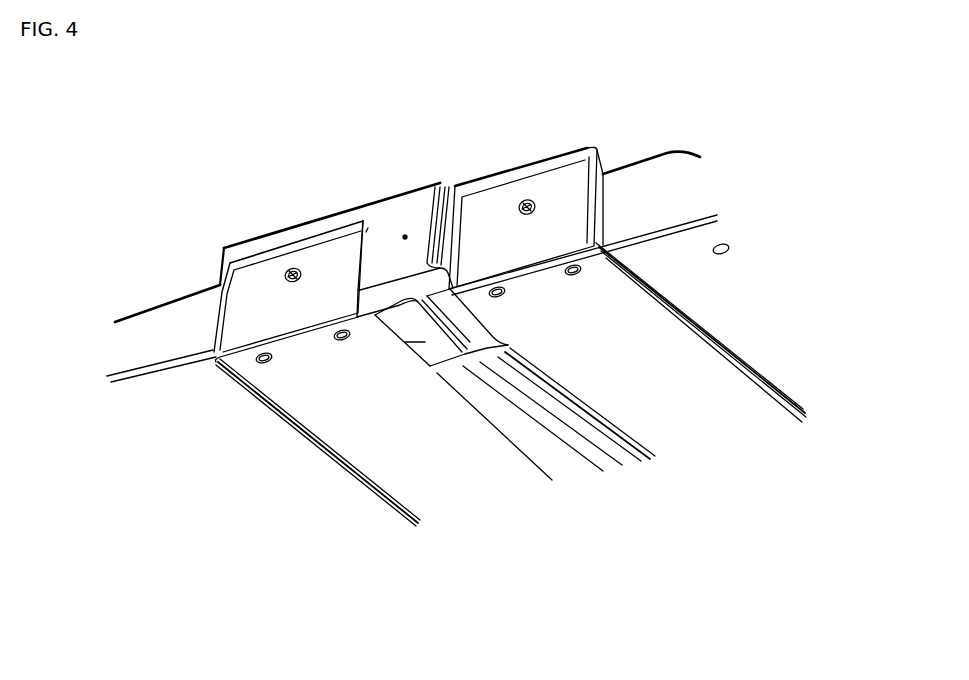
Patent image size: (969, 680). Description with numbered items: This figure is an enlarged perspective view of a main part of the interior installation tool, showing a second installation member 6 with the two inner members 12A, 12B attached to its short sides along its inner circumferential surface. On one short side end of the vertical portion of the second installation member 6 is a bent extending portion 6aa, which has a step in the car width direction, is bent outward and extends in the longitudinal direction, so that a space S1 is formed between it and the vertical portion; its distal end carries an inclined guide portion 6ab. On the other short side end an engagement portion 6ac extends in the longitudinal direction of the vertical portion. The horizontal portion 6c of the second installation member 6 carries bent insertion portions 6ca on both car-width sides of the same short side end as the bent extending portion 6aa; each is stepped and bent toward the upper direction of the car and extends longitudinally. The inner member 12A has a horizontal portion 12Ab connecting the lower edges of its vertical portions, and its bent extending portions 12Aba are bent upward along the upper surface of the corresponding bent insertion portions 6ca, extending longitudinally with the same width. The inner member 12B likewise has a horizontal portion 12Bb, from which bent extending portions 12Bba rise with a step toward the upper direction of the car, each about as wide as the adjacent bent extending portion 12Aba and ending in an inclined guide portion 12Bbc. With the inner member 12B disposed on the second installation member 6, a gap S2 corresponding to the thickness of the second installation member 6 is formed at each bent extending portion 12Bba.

The second installation member 6 is at (173, 300).
The bent extending portion 6aa is at (415, 186).
The inclined guide portion 6ab is at (380, 200).
The engagement portion 6ac is at (377, 226).
The horizontal portion 6c is at (334, 523).
The bent insertion portion 6ca is at (467, 363).
The space S1 is at (438, 184).
The gap S2 is at (437, 370).
The inner member 12A is at (563, 183).
The horizontal portion 12Ab is at (725, 388).
The bent extending portion 12Aba is at (488, 325).
The inner member 12B is at (266, 268).
The horizontal portion 12Bb is at (405, 490).
The bent extending portion 12Bba is at (417, 314).
The inclined guide portion 12Bbc is at (375, 313).